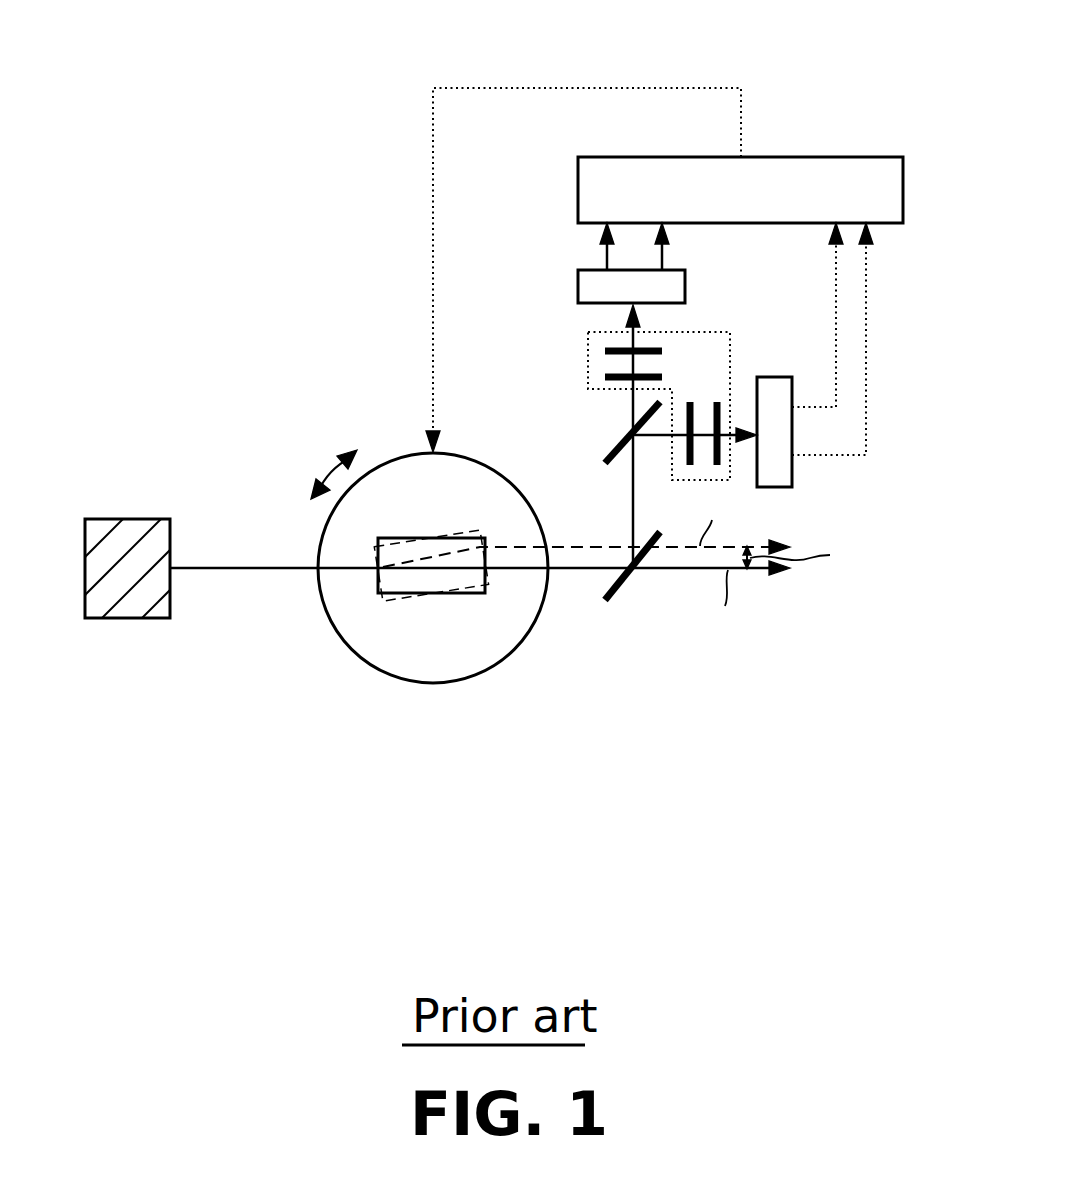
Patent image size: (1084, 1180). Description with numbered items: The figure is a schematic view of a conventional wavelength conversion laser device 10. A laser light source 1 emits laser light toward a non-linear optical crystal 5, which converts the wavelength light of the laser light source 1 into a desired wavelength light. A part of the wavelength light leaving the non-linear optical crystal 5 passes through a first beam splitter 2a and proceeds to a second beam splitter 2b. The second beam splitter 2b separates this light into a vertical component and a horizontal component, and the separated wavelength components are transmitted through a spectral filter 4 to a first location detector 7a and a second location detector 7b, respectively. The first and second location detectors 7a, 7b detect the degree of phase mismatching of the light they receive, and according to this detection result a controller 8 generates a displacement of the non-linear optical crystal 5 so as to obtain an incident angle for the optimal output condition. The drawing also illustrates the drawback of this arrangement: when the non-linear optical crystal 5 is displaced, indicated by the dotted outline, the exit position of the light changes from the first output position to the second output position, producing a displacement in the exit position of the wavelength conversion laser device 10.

The wavelength conversion laser device 10 is at (529, 33).
The laser light source 1 is at (140, 519).
The first beam splitter 2a is at (622, 588).
The second beam splitter 2b is at (620, 452).
The spectral filter 4 is at (588, 362).
The non-linear optical crystal 5 is at (415, 595).
The first location detector 7a is at (792, 485).
The second location detector 7b is at (588, 278).
The controller 8 is at (822, 157).